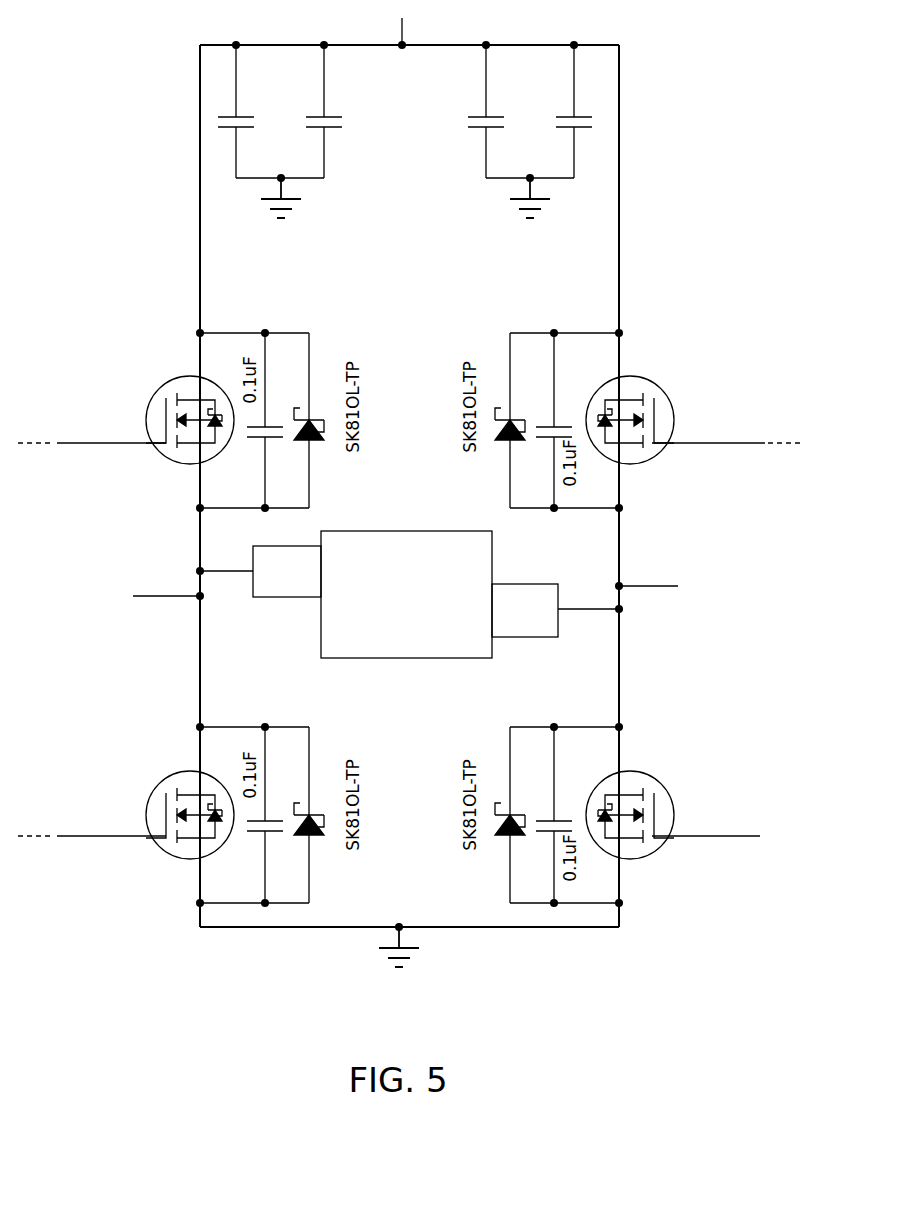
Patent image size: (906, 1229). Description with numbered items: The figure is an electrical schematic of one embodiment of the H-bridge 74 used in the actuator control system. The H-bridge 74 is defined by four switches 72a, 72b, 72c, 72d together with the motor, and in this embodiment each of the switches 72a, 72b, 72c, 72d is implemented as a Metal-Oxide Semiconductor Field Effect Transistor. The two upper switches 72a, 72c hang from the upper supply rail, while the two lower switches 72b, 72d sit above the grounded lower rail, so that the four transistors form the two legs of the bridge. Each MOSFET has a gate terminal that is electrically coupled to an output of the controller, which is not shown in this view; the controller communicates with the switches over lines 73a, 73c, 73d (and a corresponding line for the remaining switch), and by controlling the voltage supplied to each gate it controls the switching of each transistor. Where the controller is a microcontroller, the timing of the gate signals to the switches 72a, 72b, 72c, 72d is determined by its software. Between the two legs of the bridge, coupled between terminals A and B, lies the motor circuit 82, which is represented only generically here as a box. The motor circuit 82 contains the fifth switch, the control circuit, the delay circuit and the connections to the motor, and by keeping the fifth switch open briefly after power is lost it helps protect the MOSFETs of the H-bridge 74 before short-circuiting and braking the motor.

The H-bridge 74 is at (712, 215).
The switch 72a is at (150, 400).
The switch 72b is at (173, 860).
The switch 72c is at (670, 398).
The switch 72d is at (645, 860).
The line 73a is at (106, 445).
The line 73c is at (717, 443).
The line 73d is at (100, 835).
The motor circuit 82 is at (382, 525).